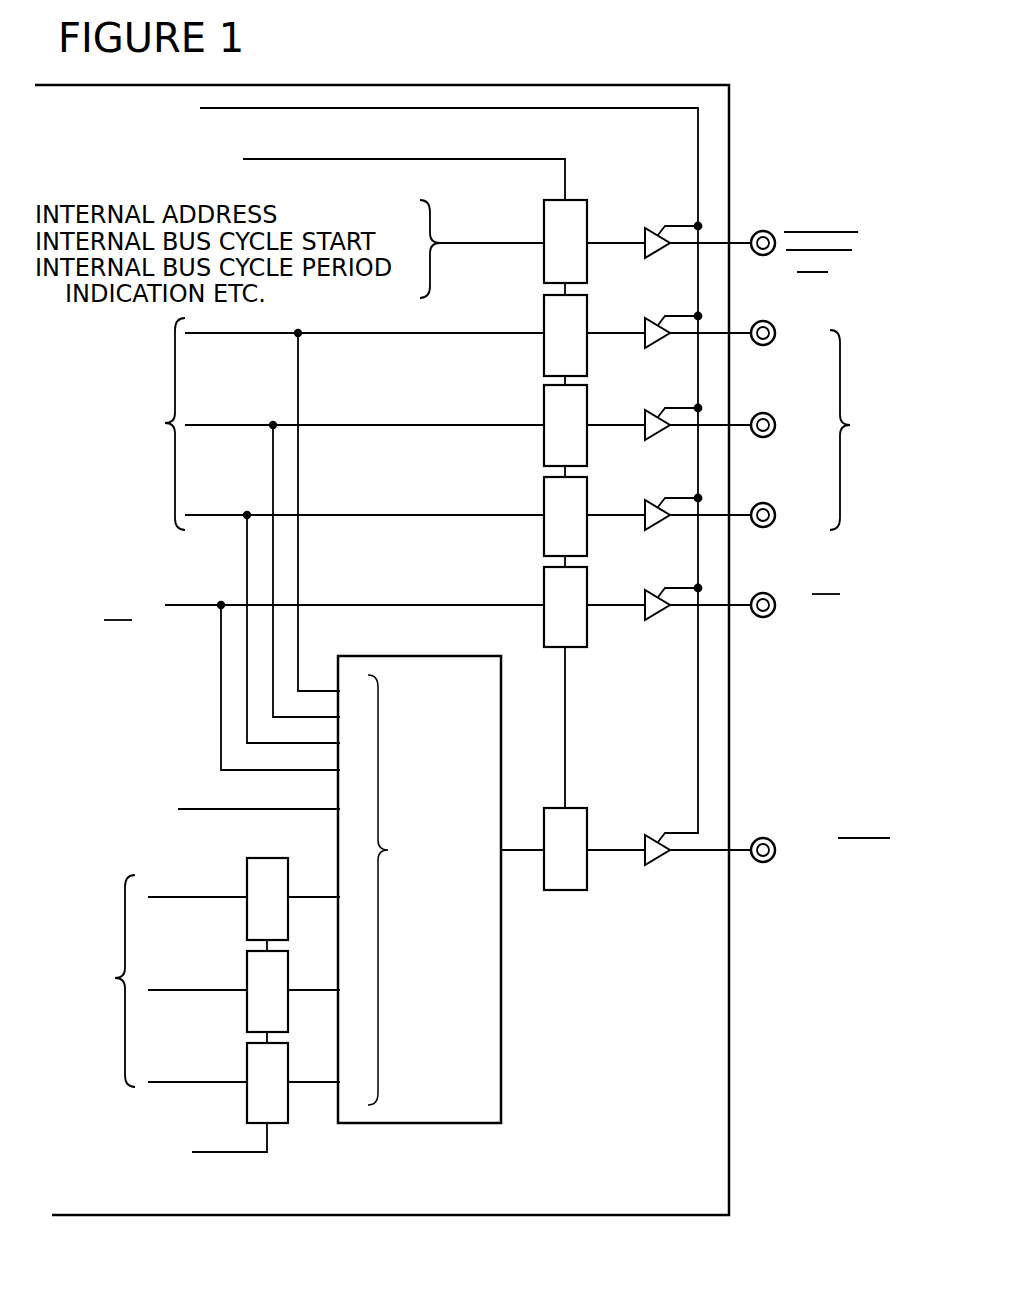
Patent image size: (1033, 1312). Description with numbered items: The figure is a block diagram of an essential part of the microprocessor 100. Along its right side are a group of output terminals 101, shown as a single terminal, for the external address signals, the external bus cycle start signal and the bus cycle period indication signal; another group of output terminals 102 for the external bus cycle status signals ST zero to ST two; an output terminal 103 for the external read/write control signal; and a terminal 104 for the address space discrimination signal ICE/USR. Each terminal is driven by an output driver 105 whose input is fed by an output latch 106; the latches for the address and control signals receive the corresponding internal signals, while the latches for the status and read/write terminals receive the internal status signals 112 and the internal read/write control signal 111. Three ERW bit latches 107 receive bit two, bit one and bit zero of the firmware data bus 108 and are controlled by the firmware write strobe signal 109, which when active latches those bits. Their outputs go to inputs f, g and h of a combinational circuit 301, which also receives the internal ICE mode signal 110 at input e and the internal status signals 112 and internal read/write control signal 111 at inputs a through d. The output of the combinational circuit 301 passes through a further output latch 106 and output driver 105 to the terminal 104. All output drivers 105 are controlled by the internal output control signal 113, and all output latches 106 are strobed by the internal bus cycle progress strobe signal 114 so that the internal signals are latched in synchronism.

The microprocessor 100 is at (465, 1216).
The group of output terminals 101 is at (763, 230).
The group of output terminals 102 is at (821, 425).
The output terminal 103 is at (766, 594).
The output terminal 104 is at (766, 838).
The output drivers 105 is at (651, 256).
The output latches 106 is at (578, 200).
The ERW bit latches 107 is at (250, 858).
The firmware data bus 108 is at (146, 978).
The firmware write strobe signal 109 is at (156, 1142).
The internal ICE mode signal 110 is at (191, 799).
The internal read/write control signal 111 is at (294, 666).
The internal status signals 112 is at (288, 530).
The internal output control signal 113 is at (366, 466).
The internal bus cycle progress strobe signal 114 is at (300, 171).
The combinational circuit 301 is at (432, 656).